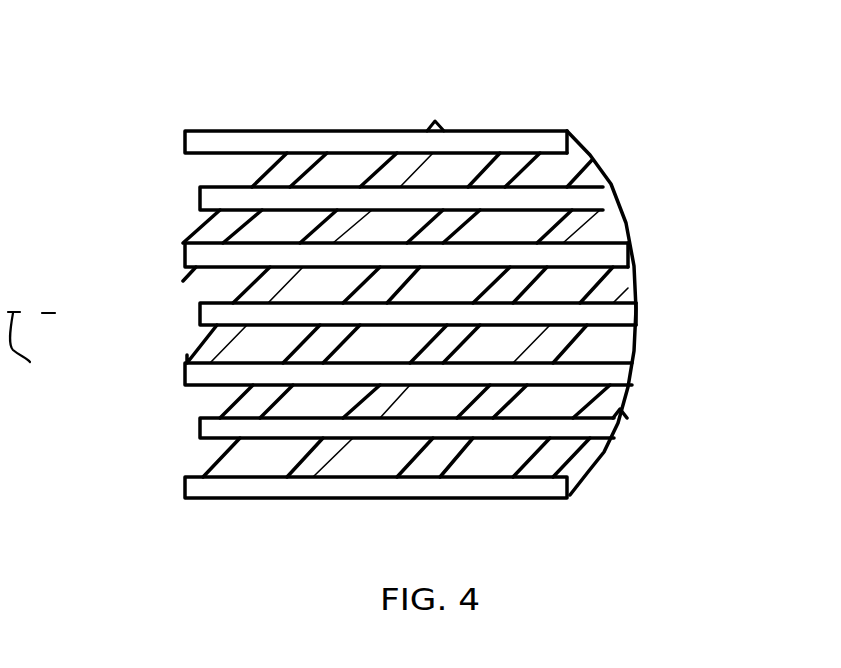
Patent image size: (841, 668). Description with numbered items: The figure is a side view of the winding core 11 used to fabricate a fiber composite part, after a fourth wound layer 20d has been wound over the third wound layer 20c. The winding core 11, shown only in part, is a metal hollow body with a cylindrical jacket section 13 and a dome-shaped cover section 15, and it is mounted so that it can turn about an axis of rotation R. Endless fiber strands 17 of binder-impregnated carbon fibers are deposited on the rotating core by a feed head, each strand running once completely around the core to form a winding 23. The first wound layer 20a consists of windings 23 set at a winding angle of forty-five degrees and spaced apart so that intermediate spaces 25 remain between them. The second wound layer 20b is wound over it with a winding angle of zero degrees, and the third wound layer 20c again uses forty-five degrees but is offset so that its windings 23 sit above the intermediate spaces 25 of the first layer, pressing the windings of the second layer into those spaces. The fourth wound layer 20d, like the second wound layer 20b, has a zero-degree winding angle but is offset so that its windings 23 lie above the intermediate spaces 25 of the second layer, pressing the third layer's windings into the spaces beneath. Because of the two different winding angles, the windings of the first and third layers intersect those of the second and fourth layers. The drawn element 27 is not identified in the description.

The winding core 11 is at (614, 480).
The cylindrical jacket section 13 is at (367, 132).
The dome-shaped cover section 15 is at (629, 222).
The endless fiber strand 17 is at (557, 197).
The first wound layer 20a is at (568, 112).
The second wound layer 20b is at (672, 328).
The third wound layer 20c is at (469, 117).
The fourth wound layer 20d is at (667, 268).
The winding 23 is at (283, 230).
The intermediate space 25 is at (330, 172).
The second diagonal strand 27 is at (240, 308).
The axis of rotation R is at (31, 358).